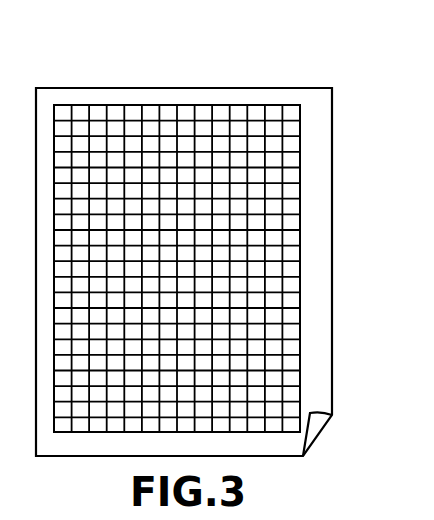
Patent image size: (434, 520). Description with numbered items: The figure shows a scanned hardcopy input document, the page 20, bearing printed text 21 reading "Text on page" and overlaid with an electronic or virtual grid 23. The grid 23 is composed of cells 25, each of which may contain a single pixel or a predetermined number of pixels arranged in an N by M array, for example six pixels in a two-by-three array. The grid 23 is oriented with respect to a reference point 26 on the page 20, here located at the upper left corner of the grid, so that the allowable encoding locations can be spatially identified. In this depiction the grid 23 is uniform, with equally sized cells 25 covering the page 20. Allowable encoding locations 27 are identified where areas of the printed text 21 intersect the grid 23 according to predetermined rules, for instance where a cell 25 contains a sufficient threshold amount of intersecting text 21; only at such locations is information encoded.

The hardcopy input document 20 is at (318, 177).
The text 21 is at (100, 117).
The grid 23 is at (269, 118).
The cell 25 is at (292, 129).
The reference point 26 is at (54, 105).
The allowable encoding location 27 is at (125, 137).